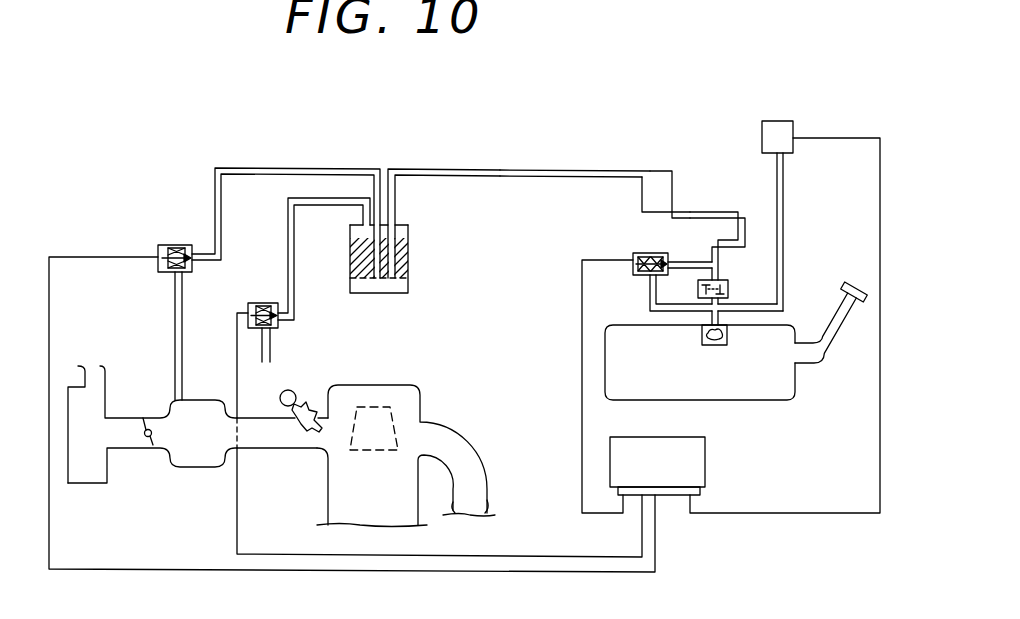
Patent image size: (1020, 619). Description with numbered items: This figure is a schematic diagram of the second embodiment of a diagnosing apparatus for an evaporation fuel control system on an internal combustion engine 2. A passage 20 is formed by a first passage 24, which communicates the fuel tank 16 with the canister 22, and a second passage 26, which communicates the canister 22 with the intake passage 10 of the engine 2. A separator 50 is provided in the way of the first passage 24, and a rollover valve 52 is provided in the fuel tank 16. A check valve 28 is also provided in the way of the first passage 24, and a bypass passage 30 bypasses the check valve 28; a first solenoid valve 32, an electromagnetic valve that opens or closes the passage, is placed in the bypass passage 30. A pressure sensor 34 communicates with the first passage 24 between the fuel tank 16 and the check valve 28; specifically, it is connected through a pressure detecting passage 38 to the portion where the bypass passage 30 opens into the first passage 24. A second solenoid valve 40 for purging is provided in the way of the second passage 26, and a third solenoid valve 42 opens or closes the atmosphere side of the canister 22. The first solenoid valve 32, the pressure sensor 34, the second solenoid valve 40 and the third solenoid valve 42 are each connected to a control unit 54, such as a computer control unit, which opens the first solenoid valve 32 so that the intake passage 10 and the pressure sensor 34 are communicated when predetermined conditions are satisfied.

The internal combustion engine 2 is at (426, 391).
The intake passage 10 is at (274, 452).
The fuel tank 16 is at (778, 390).
The passage 20 is at (459, 165).
The canister 22 is at (410, 262).
The first passage 24 is at (552, 170).
The second passage 26 is at (245, 168).
The check valve 28 is at (726, 281).
The bypass passage 30 is at (650, 302).
The first solenoid valve 32 is at (637, 255).
The pressure sensor 34 is at (780, 128).
The pressure detecting passage 38 is at (784, 224).
The second solenoid valve 40 is at (177, 246).
The third solenoid valve 42 is at (280, 329).
The separator 50 is at (658, 192).
The rollover valve 52 is at (716, 346).
The control unit 54 is at (643, 476).